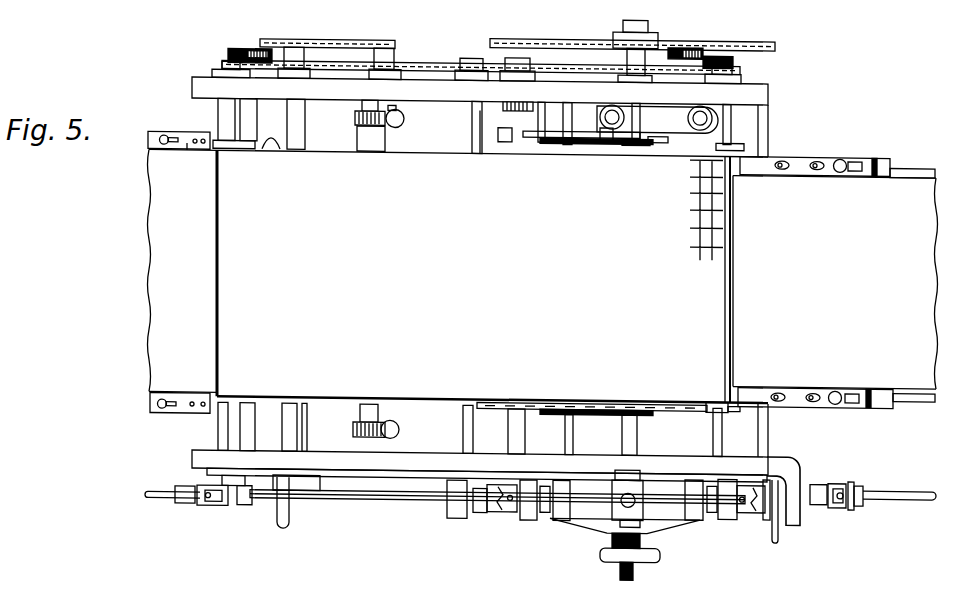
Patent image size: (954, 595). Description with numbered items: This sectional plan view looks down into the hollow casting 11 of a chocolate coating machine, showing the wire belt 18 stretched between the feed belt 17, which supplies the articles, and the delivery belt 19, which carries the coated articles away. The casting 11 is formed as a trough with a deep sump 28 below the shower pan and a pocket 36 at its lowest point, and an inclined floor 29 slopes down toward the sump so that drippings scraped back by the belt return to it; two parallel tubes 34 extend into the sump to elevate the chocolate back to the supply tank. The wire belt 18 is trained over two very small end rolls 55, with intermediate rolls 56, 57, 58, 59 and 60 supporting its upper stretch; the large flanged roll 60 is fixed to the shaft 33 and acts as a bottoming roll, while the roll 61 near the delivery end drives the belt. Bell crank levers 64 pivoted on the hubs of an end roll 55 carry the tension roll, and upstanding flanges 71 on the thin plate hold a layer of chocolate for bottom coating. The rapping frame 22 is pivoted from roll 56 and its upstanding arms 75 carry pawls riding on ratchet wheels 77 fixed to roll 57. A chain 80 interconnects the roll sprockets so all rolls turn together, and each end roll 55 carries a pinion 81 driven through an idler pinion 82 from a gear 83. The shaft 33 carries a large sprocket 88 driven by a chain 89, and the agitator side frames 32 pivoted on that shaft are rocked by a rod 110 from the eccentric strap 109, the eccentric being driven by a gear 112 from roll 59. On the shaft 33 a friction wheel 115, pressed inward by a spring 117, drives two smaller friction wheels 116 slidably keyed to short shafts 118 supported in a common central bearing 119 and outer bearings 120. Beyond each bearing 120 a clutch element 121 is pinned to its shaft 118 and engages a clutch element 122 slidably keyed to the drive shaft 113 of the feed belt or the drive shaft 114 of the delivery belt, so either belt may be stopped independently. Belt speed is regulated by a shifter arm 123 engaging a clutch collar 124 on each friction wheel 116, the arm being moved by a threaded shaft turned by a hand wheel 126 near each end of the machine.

The casting 11 is at (752, 87).
The feed belt 17 is at (835, 283).
The wire belt 18 is at (492, 276).
The delivery belt 19 is at (183, 272).
The rapping frame 22 is at (363, 146).
The sump 28 is at (732, 426).
The inclined floor 29 is at (330, 425).
The side frames 32 is at (587, 139).
The shaft 33 is at (647, 112).
The tubes 34 is at (612, 125).
The pocket 36 is at (675, 118).
The end rolls 55 is at (228, 152).
The roll 56 is at (298, 120).
The roll 57 is at (396, 104).
The roll 58 is at (472, 124).
The roll 59 is at (517, 144).
The bottoming roll 60 is at (657, 147).
The drive roll 61 is at (273, 142).
The bell crank levers 64 is at (735, 405).
The upstanding flanges 71 is at (480, 153).
The upstanding arms 75 is at (372, 147).
The ratchet wheels 77 is at (356, 109).
The chain 80 is at (437, 58).
The pinion 81 is at (228, 52).
The idler pinion 82 is at (232, 48).
The gear 83 is at (255, 48).
The sprocket 88 is at (573, 35).
The chain 89 is at (360, 38).
The strap 109 is at (507, 139).
The rod 110 is at (581, 128).
The gear 112 is at (500, 139).
The drive shaft 113 is at (888, 494).
The drive shaft 114 is at (169, 502).
The friction wheel 115 is at (597, 519).
The friction wheels 116 is at (556, 512).
The spring 117 is at (652, 533).
The short shaft 118 is at (589, 489).
The central bearing 119 is at (632, 481).
The bearing 120 is at (533, 517).
The clutch element 121 is at (516, 500).
The clutch element 122 is at (495, 509).
The shifter arm 123 is at (540, 537).
The clutch collar 124 is at (548, 487).
The hand wheel 126 is at (277, 526).